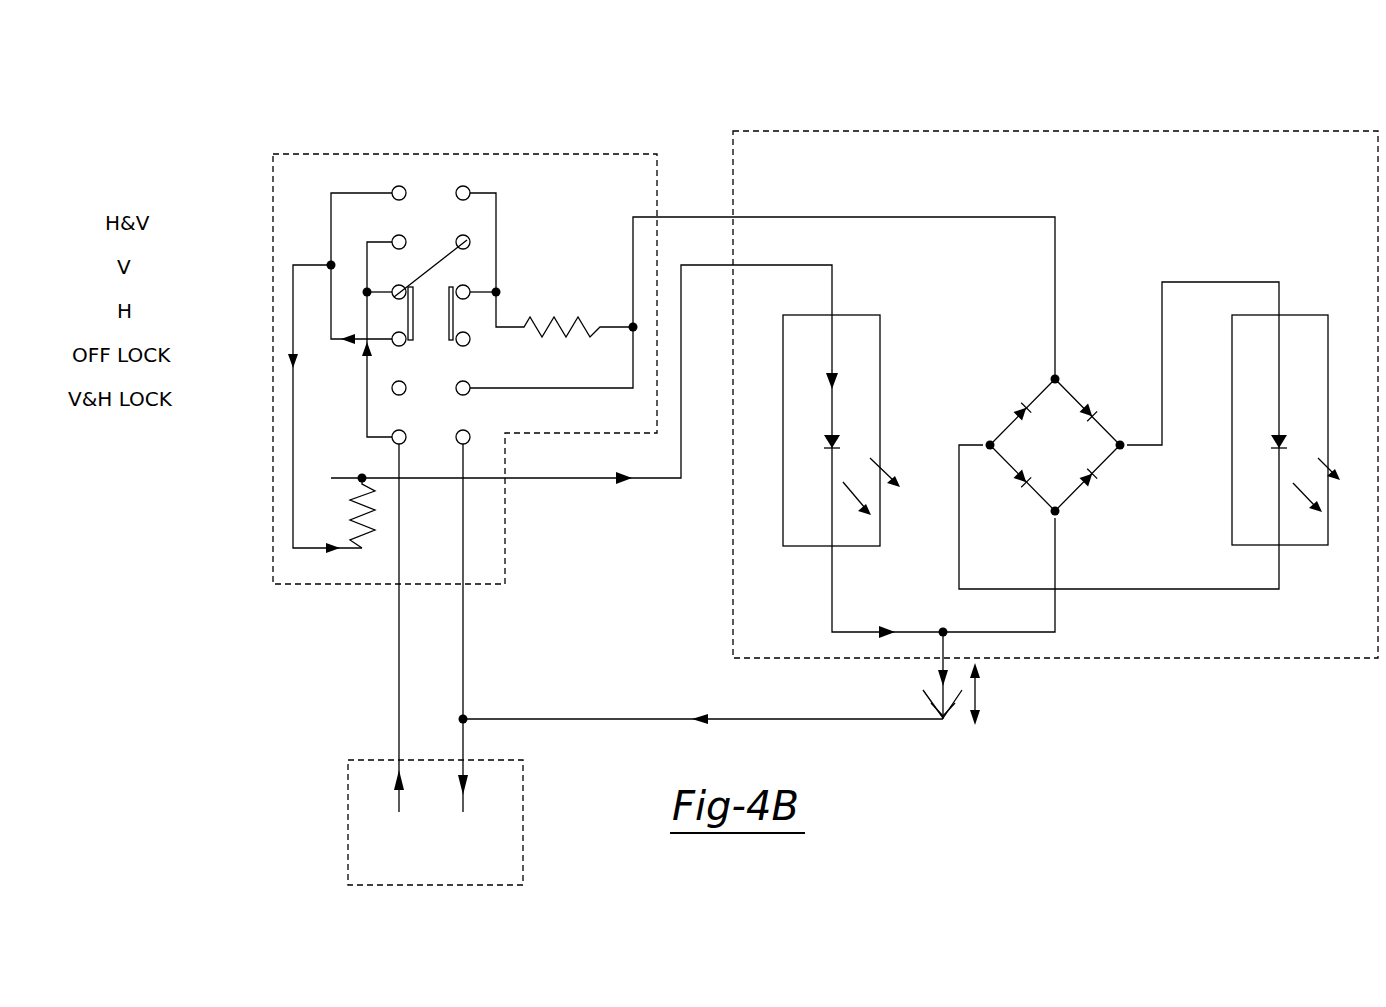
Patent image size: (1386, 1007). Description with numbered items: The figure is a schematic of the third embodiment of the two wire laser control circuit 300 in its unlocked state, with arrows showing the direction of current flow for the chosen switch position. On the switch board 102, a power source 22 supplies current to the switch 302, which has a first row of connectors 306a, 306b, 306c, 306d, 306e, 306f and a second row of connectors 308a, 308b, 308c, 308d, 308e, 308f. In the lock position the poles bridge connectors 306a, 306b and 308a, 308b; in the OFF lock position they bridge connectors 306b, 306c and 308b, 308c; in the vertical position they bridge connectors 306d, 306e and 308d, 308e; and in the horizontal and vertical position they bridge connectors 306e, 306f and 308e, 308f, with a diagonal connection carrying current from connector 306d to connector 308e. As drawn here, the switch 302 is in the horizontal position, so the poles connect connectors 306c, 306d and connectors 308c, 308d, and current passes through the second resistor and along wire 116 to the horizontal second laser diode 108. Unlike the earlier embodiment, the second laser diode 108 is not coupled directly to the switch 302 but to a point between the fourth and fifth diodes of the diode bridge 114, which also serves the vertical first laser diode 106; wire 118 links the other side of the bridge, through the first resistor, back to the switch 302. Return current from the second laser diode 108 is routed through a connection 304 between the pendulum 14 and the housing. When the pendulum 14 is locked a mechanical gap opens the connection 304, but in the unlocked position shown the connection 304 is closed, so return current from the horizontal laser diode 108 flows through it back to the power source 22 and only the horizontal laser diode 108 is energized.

The two wire laser control circuit 300 is at (428, 97).
The switch 302 is at (588, 152).
The connector 306a is at (394, 431).
The connector 306b is at (393, 384).
The connector 306c is at (394, 335).
The connector 306d is at (397, 299).
The connector 306e is at (397, 236).
The connector 306f is at (394, 186).
The connector 308a is at (468, 441).
The connector 308b is at (468, 394).
The connector 308c is at (469, 340).
The connector 308d is at (465, 285).
The connector 308e is at (468, 241).
The connector 308f is at (469, 186).
The switch board 102 is at (295, 588).
The pendulum 14 is at (1051, 130).
The second laser diode 108 is at (857, 313).
The first laser diode 106 is at (1310, 313).
The diode bridge 114 is at (1094, 528).
The wire 116 is at (651, 485).
The wire 118 is at (684, 214).
The connection 304 is at (900, 696).
The power source 22 is at (346, 822).